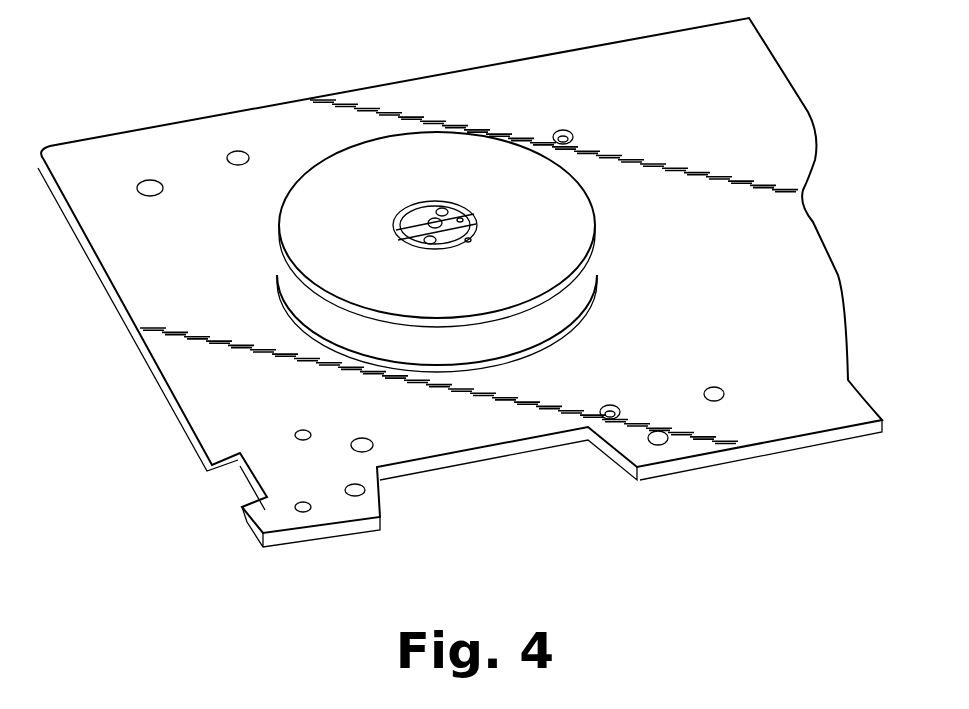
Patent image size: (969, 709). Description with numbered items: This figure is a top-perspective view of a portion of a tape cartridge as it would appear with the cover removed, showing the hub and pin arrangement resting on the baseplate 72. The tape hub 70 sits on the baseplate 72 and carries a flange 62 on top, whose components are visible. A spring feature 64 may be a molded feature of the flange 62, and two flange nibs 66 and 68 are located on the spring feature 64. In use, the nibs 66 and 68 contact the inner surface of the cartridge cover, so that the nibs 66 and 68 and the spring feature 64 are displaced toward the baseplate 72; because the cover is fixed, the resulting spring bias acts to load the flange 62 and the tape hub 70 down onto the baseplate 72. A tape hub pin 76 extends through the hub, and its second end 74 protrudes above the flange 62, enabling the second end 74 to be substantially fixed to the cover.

The flange 62 is at (303, 216).
The spring feature 64 is at (463, 223).
The flange nib 66 is at (412, 250).
The flange nib 68 is at (442, 208).
The tape hub 70 is at (563, 310).
The baseplate 72 is at (183, 374).
The second end 74 is at (432, 221).
The tape hub pin 76 is at (431, 244).